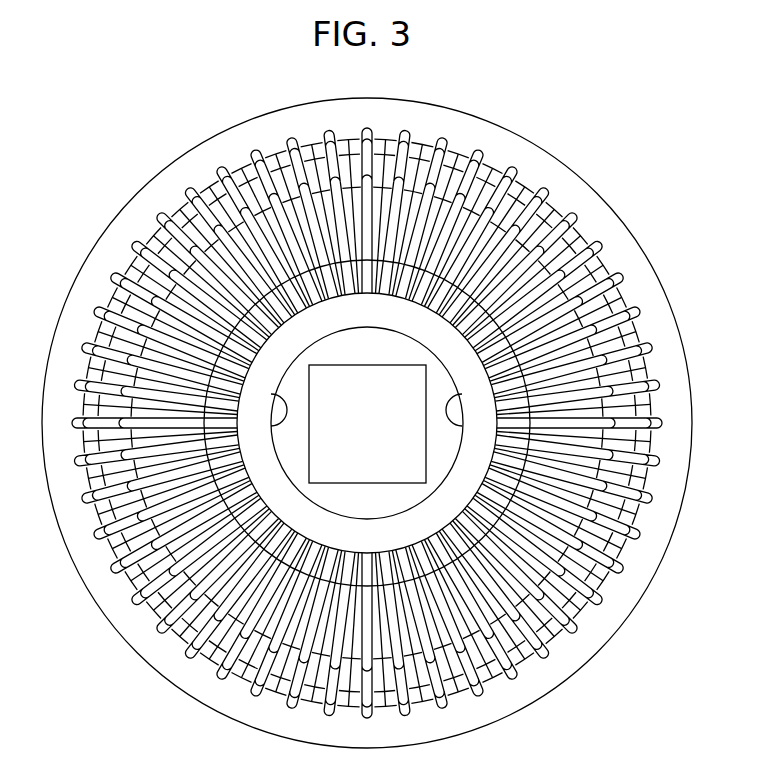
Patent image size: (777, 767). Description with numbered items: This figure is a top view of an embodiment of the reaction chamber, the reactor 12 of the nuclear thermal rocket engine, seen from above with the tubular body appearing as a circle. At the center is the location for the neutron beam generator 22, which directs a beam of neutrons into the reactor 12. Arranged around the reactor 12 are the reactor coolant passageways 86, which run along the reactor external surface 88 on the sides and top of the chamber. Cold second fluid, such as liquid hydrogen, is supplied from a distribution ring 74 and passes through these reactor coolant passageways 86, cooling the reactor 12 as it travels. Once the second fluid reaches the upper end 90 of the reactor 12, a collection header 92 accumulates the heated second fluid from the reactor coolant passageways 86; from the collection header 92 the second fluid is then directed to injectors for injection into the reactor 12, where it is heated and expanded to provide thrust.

The reactor 12 is at (553, 207).
The neutron beam generator 22 is at (309, 462).
The distribution ring 74 is at (692, 428).
The reactor coolant passageways 86 is at (133, 246).
The reactor external surface 88 is at (140, 230).
The upper end 90 is at (538, 618).
The collection header 92 is at (470, 422).